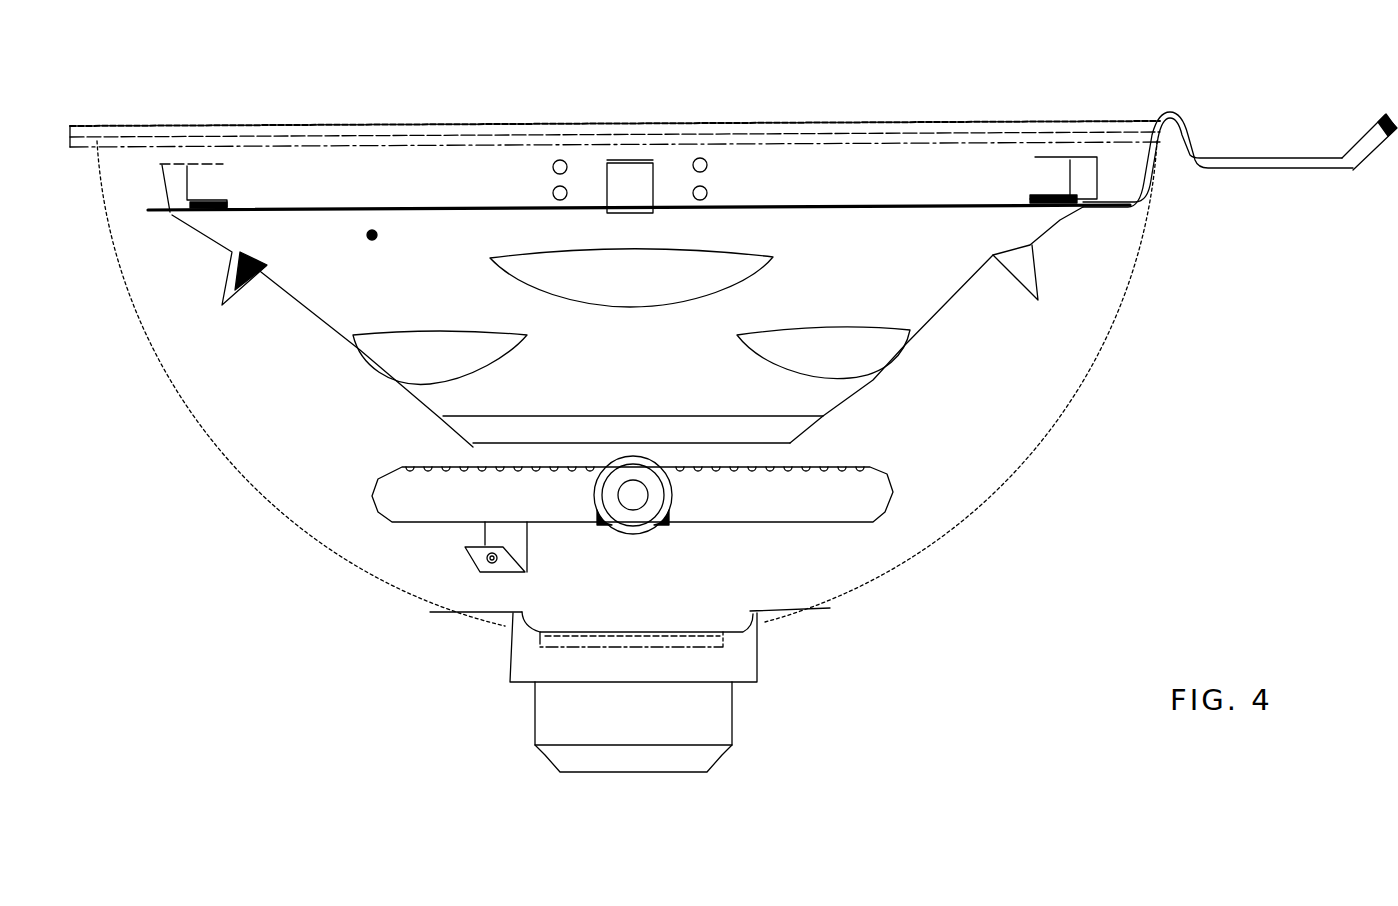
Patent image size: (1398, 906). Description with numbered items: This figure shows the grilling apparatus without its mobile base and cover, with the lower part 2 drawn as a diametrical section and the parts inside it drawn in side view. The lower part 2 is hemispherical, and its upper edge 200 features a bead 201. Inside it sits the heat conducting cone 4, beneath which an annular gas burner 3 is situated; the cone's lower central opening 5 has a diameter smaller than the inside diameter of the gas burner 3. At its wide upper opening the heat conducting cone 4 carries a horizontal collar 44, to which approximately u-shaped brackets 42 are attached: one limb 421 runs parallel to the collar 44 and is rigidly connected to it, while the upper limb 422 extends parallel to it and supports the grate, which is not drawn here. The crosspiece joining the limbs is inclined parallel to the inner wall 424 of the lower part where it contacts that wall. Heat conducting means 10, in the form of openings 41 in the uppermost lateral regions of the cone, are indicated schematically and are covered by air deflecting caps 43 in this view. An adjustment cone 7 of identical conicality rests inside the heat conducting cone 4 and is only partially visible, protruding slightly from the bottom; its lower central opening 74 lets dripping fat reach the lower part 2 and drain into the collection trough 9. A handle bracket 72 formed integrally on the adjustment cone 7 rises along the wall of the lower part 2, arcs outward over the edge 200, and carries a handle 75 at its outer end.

The lower part 2 is at (1015, 432).
The annular gas burner 3 is at (455, 500).
The heat conducting cone 4 is at (408, 310).
The lower central opening 5 is at (763, 418).
The adjustment cone 7 is at (733, 430).
The collection trough 9 is at (687, 713).
The heat conducting means 10 is at (1020, 263).
The openings 41 is at (993, 255).
The brackets 42 is at (175, 185).
The air deflecting caps 43 is at (823, 353).
The horizontal collar 44 is at (250, 209).
The handle bracket 72 is at (1208, 128).
The lower central opening 74 is at (647, 447).
The handle 75 is at (1360, 150).
The upper edge 200 is at (80, 127).
The bead 201 is at (94, 139).
The limb 421 is at (208, 202).
The upper limb 422 is at (1047, 158).
The inner wall 424 is at (300, 451).